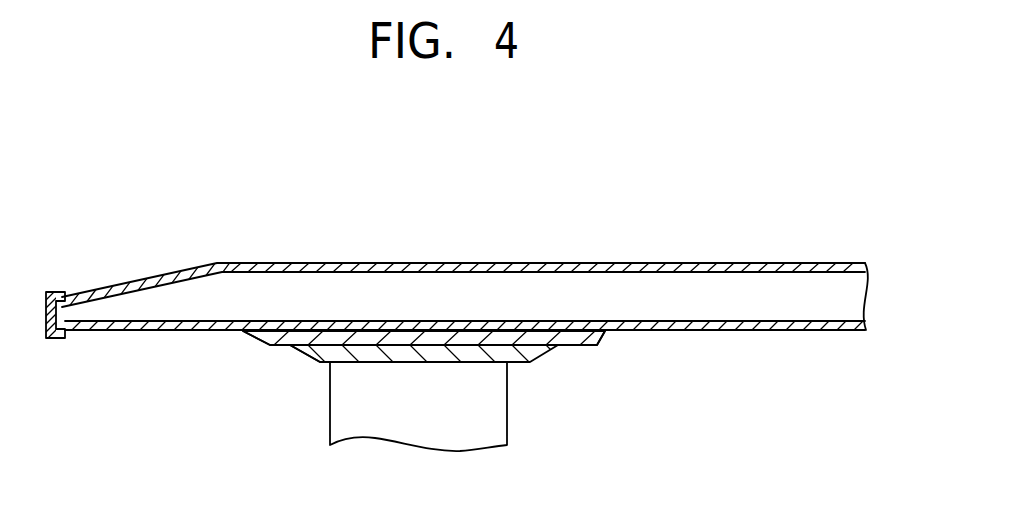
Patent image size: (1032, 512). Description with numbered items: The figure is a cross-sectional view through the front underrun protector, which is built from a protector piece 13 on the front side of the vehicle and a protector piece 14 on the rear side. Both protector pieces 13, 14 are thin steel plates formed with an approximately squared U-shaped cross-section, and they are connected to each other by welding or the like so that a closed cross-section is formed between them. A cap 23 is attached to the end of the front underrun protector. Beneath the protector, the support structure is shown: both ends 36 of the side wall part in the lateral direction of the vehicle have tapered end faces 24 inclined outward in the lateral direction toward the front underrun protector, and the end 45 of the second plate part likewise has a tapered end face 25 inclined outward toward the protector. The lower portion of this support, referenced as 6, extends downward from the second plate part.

The support column 6 is at (507, 401).
The protector piece 13 is at (268, 262).
The protector piece 14 is at (110, 331).
The cap 23 is at (52, 292).
The tapered end face 24 is at (251, 341).
The tapered end face 25 is at (301, 350).
The end of the side wall part 36 is at (270, 343).
The end of the second plate part 45 is at (316, 363).